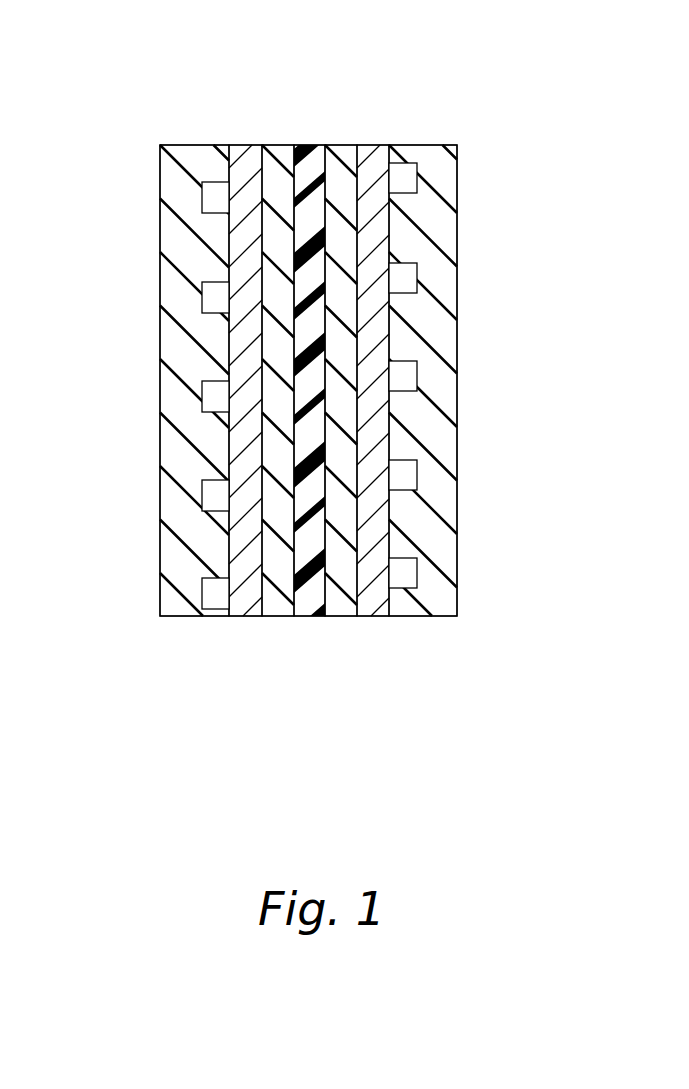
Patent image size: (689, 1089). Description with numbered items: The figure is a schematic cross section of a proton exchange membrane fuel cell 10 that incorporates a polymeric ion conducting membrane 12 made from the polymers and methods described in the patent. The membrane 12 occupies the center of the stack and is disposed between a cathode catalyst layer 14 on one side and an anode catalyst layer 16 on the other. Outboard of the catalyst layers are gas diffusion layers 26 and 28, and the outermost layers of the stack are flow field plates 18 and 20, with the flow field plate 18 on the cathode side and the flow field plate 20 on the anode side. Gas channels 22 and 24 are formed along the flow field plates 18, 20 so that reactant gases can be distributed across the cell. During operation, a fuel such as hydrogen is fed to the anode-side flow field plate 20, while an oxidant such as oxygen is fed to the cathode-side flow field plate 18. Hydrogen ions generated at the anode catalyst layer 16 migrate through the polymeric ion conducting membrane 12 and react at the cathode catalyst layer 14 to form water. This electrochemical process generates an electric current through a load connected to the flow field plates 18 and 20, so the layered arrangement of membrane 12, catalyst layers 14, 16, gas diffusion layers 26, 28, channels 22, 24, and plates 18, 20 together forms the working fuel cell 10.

The proton exchange membrane fuel cell 10 is at (88, 147).
The polymeric ion conducting membrane 12 is at (315, 147).
The cathode catalyst layer 14 is at (283, 148).
The anode catalyst layer 16 is at (337, 147).
The flow field plate 18 is at (197, 155).
The flow field plate 20 is at (415, 148).
The gas channel 22 is at (210, 195).
The gas channel 24 is at (407, 173).
The gas diffusion layer 26 is at (250, 145).
The gas diffusion layer 28 is at (373, 148).